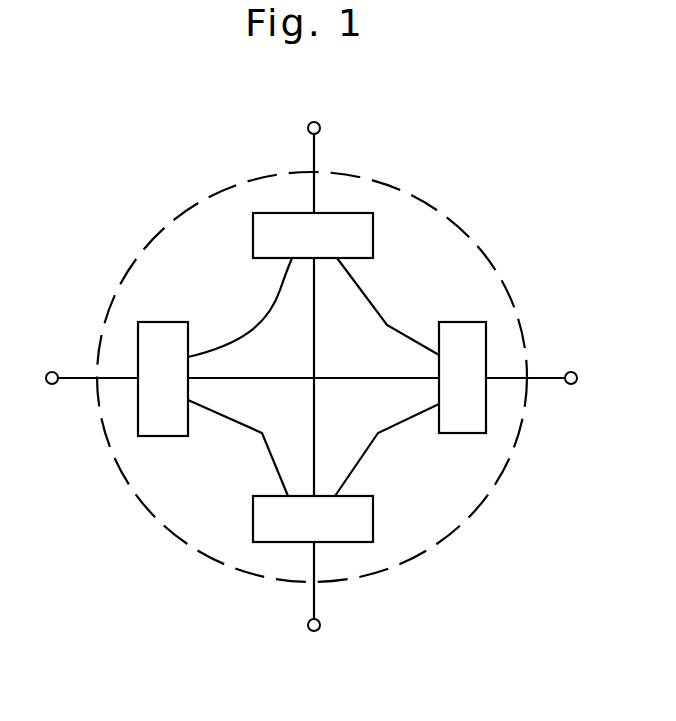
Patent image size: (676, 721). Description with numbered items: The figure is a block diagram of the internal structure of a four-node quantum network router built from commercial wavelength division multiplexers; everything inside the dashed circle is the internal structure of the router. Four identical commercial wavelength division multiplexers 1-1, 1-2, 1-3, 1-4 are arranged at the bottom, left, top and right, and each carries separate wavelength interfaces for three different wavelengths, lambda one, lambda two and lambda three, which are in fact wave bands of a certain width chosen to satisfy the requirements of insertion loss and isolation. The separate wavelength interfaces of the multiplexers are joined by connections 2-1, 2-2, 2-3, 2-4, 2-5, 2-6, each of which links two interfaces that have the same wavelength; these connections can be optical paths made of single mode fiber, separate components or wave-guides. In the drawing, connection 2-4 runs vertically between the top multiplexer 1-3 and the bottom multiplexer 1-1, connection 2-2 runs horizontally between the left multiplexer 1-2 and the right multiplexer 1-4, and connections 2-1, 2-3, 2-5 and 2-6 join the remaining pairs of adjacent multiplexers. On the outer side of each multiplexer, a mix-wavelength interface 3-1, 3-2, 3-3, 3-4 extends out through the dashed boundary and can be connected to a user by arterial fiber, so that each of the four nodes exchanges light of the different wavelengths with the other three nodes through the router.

The commercial wavelength division multiplexer 1-1 is at (313, 532).
The commercial wavelength division multiplexer 1-2 is at (150, 379).
The commercial wavelength division multiplexer 1-3 is at (313, 220).
The commercial wavelength division multiplexer 1-4 is at (477, 377).
The connection between separate wavelength interfaces 2-1 is at (387, 450).
The connection between separate wavelength interfaces 2-2 is at (313, 375).
The connection between separate wavelength interfaces 2-3 is at (388, 306).
The connection between separate wavelength interfaces 2-4 is at (315, 377).
The connection between separate wavelength interfaces 2-5 is at (240, 307).
The connection between separate wavelength interfaces 2-6 is at (238, 448).
The mix-wavelength interface 3-1 is at (274, 591).
The mix-wavelength interface 3-2 is at (85, 343).
The mix-wavelength interface 3-3 is at (346, 161).
The mix-wavelength interface 3-4 is at (536, 347).